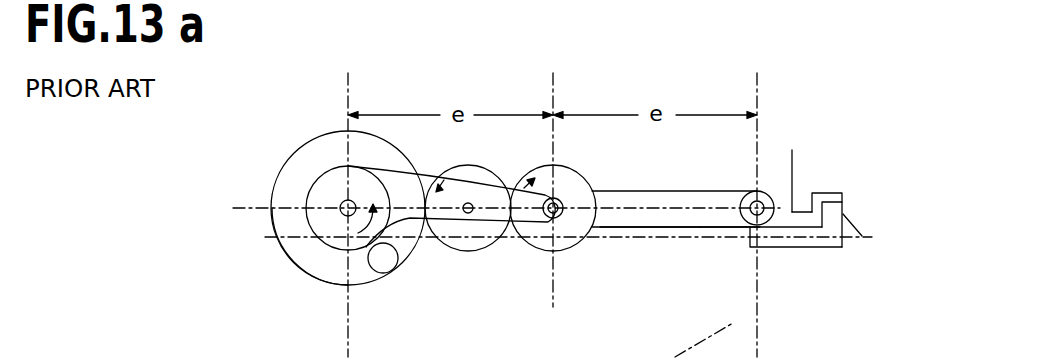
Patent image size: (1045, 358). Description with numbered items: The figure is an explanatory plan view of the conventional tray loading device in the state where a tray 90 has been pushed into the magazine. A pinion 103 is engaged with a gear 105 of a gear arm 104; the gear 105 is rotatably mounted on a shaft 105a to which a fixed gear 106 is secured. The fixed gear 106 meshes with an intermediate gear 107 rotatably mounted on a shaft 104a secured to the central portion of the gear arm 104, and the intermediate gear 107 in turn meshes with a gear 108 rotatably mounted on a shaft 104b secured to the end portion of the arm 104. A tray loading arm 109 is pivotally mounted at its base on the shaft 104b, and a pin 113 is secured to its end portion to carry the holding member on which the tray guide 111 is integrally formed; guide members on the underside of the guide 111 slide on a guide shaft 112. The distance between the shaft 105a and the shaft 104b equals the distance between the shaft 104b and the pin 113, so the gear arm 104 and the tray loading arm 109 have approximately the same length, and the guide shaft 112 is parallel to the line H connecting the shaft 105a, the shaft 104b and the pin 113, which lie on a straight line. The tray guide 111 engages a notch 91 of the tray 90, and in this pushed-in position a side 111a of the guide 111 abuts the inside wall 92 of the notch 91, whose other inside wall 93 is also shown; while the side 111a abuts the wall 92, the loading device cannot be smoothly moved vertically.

The gear 105 is at (322, 244).
The shaft 105a is at (342, 203).
The fixed gear 106 is at (272, 222).
The pinion 103 is at (374, 268).
The gear arm 104 is at (402, 200).
The shaft 104a is at (468, 214).
The shaft 104b is at (563, 220).
The intermediate gear 107 is at (495, 245).
The gear 108 is at (583, 174).
The line H is at (651, 206).
The tray loading arm 109 is at (658, 222).
The guide shaft 112 is at (713, 227).
The pin 113 is at (749, 189).
The tray guide 111 is at (790, 248).
The side 111a is at (818, 248).
The inside wall 92 is at (842, 194).
The notch 91 is at (808, 204).
The inside wall 93 is at (794, 152).
The tray 90 is at (858, 238).